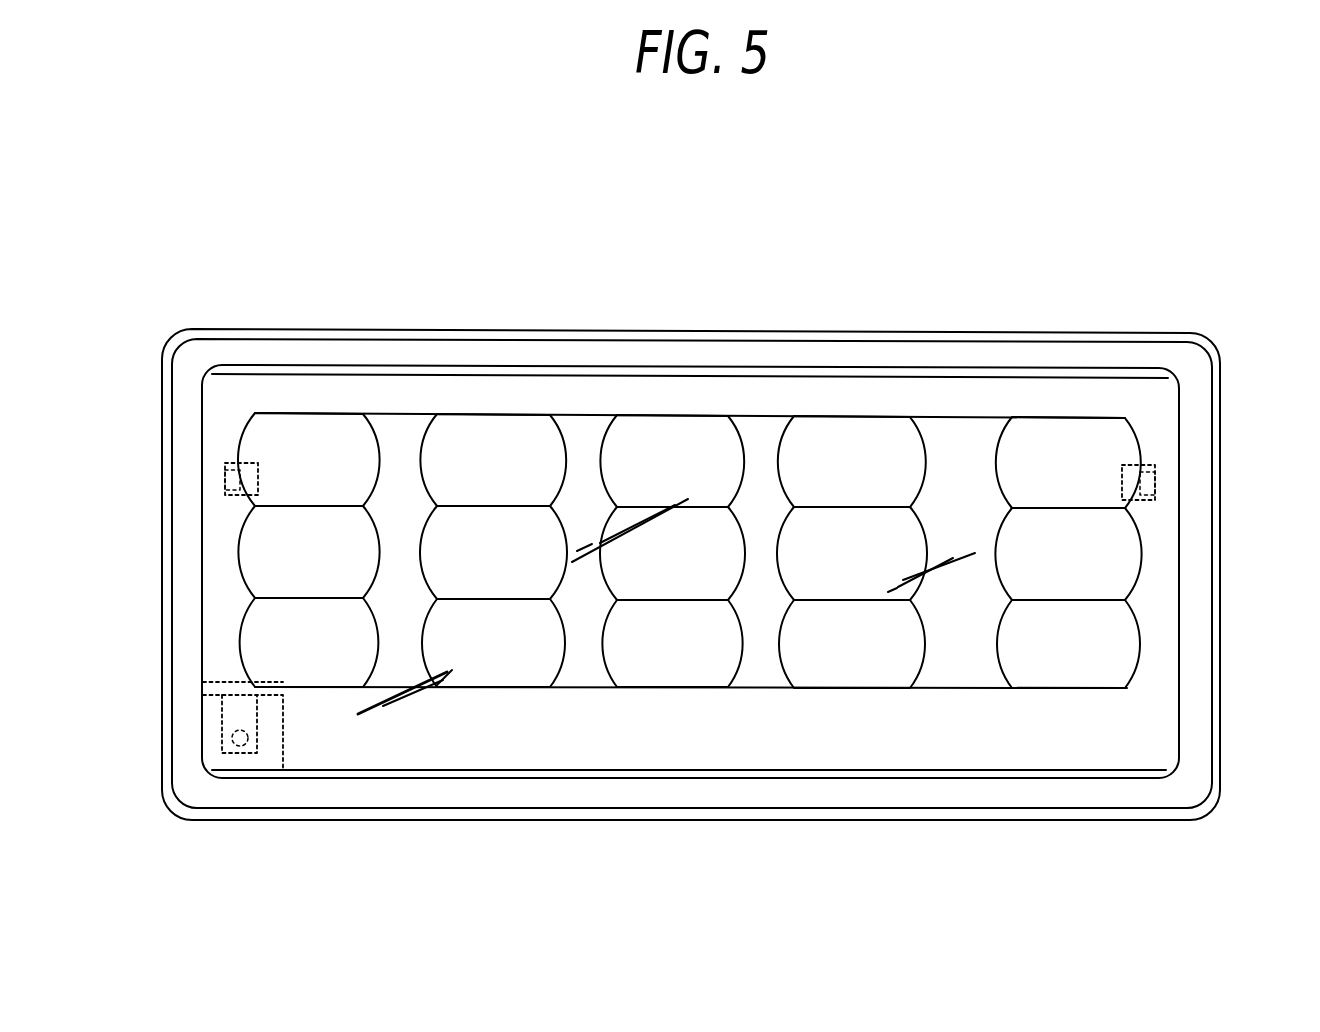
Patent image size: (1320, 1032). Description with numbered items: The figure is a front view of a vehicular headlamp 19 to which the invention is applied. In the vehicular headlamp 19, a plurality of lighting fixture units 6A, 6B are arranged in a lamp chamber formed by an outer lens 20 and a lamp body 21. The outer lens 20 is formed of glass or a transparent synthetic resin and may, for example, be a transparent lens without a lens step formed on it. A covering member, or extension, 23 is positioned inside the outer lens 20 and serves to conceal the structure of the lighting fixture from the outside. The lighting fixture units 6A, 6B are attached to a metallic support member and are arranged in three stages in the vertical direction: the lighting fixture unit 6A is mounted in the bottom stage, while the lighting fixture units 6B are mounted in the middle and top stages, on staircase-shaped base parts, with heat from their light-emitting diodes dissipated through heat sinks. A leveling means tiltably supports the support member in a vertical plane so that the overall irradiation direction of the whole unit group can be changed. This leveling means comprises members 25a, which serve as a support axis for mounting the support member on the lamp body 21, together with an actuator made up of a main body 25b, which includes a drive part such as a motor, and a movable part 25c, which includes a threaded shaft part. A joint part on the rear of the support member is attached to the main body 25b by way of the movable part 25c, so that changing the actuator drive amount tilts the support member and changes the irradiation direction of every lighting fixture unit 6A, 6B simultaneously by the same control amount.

The vehicular headlamp 19 is at (1006, 217).
The outer lens 20 is at (525, 393).
The lamp body 21 is at (655, 329).
The covering member (extension) 23 is at (958, 730).
The lighting fixture unit 6A is at (515, 668).
The lighting fixture unit 6B is at (327, 438).
The member serving as support axis 25a is at (228, 469).
The main body of the actuator 25b is at (287, 740).
The movable part of the actuator 25c is at (228, 757).